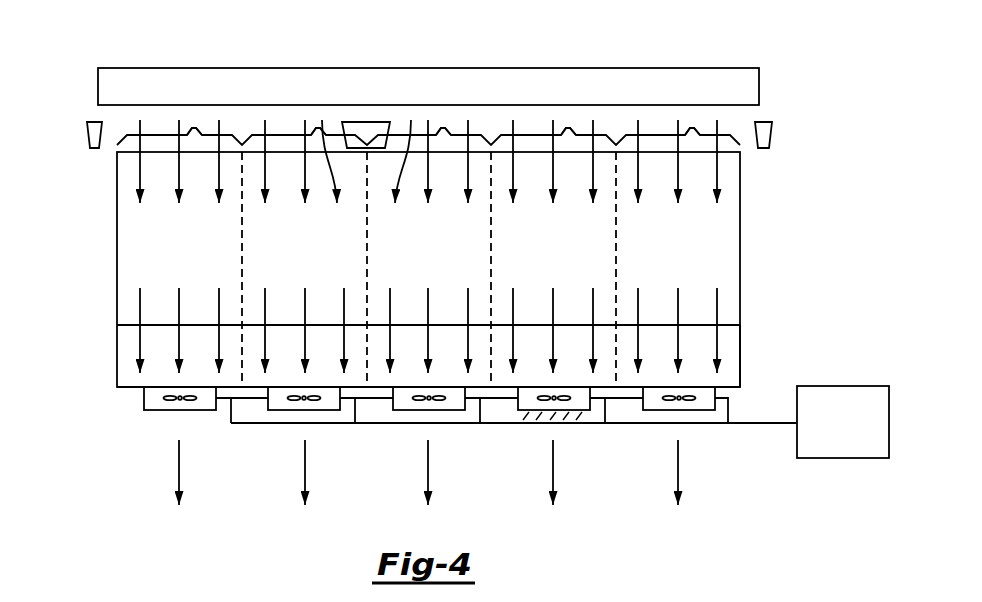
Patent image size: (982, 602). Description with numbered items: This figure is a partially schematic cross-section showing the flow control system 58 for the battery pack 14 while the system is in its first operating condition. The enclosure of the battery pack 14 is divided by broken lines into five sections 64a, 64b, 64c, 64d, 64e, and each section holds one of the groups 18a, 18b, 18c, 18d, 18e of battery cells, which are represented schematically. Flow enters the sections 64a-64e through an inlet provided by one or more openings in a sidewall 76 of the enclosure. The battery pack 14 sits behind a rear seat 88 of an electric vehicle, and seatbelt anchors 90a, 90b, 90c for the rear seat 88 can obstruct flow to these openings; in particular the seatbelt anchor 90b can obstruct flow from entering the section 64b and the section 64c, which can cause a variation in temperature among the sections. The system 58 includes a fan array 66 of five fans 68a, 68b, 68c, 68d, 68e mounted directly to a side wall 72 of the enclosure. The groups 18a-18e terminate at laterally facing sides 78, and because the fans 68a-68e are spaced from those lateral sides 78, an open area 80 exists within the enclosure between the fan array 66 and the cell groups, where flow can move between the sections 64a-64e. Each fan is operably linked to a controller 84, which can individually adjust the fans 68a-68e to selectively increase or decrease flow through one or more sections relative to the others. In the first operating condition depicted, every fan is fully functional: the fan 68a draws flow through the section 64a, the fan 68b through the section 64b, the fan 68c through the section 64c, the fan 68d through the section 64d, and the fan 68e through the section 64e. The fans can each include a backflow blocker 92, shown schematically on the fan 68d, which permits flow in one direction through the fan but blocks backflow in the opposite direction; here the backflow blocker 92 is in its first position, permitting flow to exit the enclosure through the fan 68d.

The battery pack 14 is at (826, 217).
The group of battery cells 18a is at (188, 263).
The group of battery cells 18b is at (311, 263).
The group of battery cells 18c is at (438, 263).
The group of battery cells 18d is at (563, 263).
The group of battery cells 18e is at (686, 263).
The flow control system 58 is at (723, 496).
The section 64a is at (194, 128).
The section 64b is at (318, 128).
The section 64c is at (443, 128).
The section 64d is at (568, 128).
The section 64e is at (692, 128).
The fan array 66 is at (114, 404).
The fan 68a is at (144, 397).
The fan 68b is at (268, 398).
The fan 68c is at (393, 398).
The fan 68d is at (518, 398).
The fan 68e is at (643, 398).
The side wall 72 is at (734, 391).
The sidewall 76 is at (613, 127).
The laterally facing sides 78 is at (122, 327).
The open area 80 is at (129, 371).
The controller 84 is at (851, 448).
The rear seat 88 is at (759, 87).
The seatbelt anchor 90a is at (92, 121).
The seatbelt anchor 90b is at (367, 122).
The seatbelt anchor 90c is at (772, 135).
The backflow blocker 92 is at (531, 426).